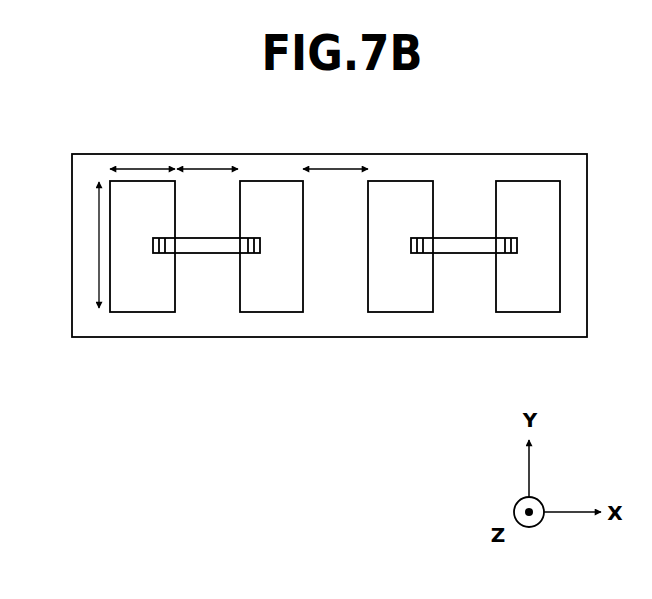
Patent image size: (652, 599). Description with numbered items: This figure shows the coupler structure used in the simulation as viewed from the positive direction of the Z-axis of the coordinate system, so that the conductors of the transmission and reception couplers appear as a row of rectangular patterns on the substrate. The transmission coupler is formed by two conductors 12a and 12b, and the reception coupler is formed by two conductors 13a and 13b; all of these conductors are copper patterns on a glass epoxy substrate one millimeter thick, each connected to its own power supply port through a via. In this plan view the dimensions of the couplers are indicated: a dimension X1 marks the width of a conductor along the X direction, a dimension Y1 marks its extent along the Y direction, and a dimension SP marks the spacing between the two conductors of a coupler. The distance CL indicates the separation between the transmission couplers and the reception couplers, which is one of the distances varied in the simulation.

The conductor 13a is at (142, 312).
The conductor 13b is at (270, 312).
The conductor 12a is at (398, 312).
The conductor 12b is at (527, 312).
The dimension X1 is at (146, 169).
The dimension SP is at (208, 169).
The distance CL is at (335, 169).
The dimension Y1 is at (99, 245).